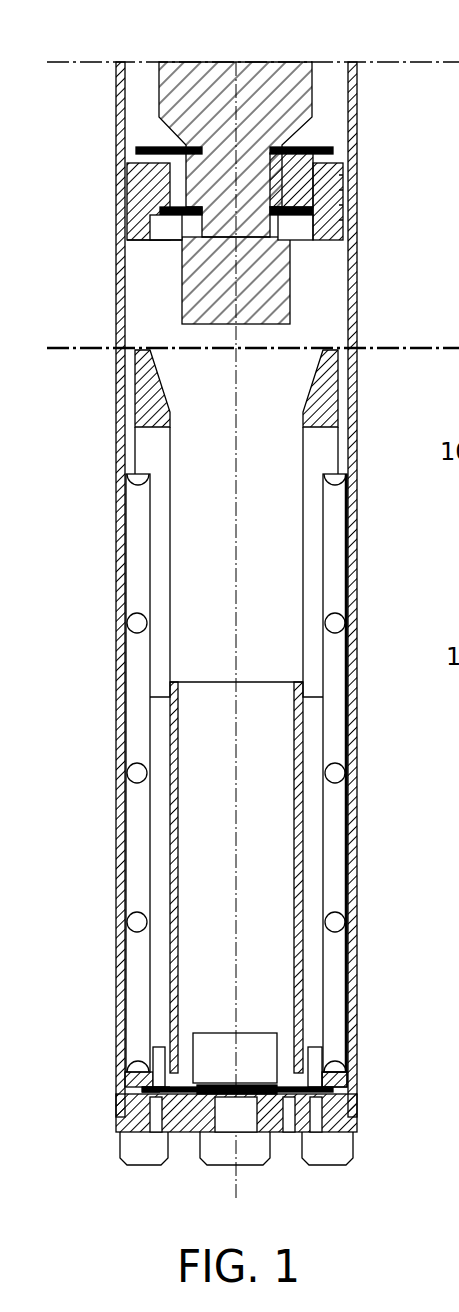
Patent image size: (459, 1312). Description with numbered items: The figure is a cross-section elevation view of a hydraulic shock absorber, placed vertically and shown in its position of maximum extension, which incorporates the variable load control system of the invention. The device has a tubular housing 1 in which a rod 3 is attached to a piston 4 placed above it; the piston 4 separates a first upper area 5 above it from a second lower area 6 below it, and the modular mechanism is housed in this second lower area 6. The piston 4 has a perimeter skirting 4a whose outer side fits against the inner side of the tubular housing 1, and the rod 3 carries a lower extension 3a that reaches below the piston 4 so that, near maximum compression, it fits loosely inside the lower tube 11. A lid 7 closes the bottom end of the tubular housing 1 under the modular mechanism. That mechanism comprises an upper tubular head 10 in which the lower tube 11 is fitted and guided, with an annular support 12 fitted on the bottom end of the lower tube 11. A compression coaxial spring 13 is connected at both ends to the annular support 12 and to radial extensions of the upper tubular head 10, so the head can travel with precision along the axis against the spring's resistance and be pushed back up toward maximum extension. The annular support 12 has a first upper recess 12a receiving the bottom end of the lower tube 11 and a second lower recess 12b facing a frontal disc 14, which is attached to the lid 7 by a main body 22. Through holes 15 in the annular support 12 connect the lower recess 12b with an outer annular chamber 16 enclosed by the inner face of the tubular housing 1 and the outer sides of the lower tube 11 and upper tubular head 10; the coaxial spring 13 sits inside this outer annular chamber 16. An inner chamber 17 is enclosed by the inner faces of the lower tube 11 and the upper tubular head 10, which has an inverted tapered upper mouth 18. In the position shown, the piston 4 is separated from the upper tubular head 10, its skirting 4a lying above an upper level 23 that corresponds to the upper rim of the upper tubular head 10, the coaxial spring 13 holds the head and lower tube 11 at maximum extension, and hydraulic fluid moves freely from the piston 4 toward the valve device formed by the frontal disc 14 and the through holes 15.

The tubular housing 1 is at (358, 133).
The rod 3 is at (315, 80).
The lower extension 3a is at (255, 290).
The piston 4 is at (313, 184).
The perimeter skirting 4a is at (343, 233).
The first upper area 5 is at (330, 118).
The second lower area 6 is at (313, 742).
The lid 7 is at (358, 1115).
The upper tubular head 10 is at (142, 528).
The lower tube 11 is at (306, 845).
The annular support 12 is at (285, 1075).
The first upper recess 12a is at (160, 1085).
The second lower recess 12b is at (147, 1090).
The compression coaxial spring 13 is at (338, 921).
The frontal disc 14 is at (325, 1088).
The through holes 15 is at (312, 1058).
The outer annular chamber 16 is at (332, 732).
The inner chamber 17 is at (205, 812).
The tapered upper mouth 18 is at (305, 402).
The main body 22 is at (203, 1042).
The upper level 23 is at (68, 345).